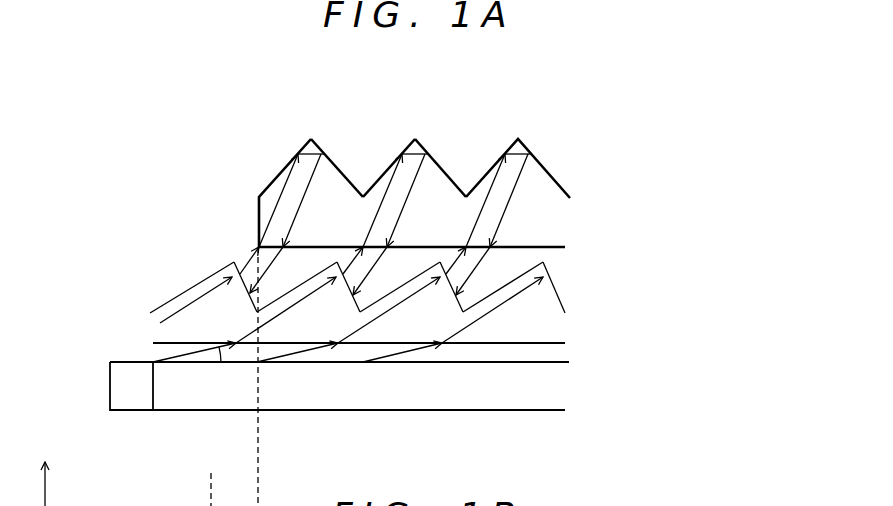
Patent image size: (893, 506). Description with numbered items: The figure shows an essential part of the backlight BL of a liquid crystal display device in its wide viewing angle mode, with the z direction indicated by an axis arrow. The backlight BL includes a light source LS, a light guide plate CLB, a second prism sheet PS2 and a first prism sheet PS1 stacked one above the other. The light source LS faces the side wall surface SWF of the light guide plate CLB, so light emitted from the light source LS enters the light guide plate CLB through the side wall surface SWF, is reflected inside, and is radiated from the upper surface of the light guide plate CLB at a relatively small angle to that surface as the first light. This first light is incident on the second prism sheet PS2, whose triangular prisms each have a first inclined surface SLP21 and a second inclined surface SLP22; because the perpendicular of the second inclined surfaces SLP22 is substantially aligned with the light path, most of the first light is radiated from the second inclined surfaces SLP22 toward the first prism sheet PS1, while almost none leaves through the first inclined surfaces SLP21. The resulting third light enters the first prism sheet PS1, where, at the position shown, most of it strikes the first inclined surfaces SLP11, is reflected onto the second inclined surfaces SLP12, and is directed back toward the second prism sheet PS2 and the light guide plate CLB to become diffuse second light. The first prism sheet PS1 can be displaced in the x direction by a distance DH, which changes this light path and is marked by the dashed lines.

The backlight BL is at (695, 145).
The first prism sheet PS1 is at (538, 182).
The second prism sheet PS2 is at (541, 307).
The first inclined surface SLP11 is at (392, 165).
The second inclined surface SLP12 is at (440, 165).
The first inclined surface SLP21 is at (297, 285).
The second inclined surface SLP22 is at (341, 275).
The light guide plate CLB is at (435, 393).
The light source LS is at (120, 385).
The side wall surface SWF is at (153, 390).
The distance DH is at (234, 376).
The z direction z is at (37, 476).